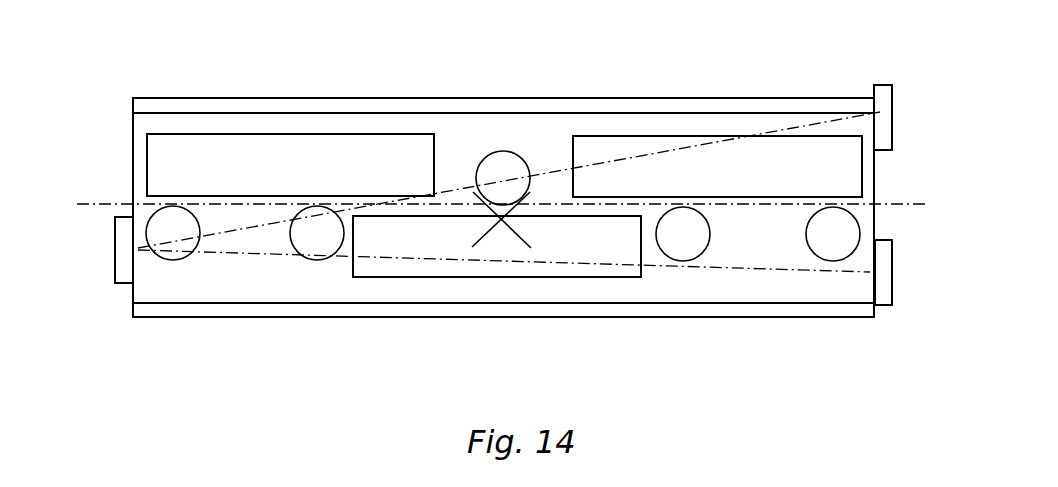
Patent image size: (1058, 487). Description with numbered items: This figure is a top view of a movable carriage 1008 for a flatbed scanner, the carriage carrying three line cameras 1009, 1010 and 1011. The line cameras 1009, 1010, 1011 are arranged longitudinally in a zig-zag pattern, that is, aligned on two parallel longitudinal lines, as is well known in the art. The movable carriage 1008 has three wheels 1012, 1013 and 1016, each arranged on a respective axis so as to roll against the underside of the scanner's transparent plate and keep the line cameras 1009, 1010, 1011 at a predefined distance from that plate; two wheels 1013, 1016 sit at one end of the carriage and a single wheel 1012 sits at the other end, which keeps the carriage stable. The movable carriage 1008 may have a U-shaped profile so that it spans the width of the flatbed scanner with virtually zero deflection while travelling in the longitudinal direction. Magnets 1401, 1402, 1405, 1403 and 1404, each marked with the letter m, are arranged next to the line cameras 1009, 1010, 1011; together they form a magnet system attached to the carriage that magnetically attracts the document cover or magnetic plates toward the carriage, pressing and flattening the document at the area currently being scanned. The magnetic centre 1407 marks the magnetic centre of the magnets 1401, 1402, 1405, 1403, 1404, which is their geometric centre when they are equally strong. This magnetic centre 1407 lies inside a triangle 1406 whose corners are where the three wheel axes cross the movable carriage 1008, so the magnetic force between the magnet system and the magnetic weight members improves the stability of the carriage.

The movable carriage 1008 is at (132, 137).
The line camera 1009 is at (290, 165).
The line camera 1010 is at (497, 246).
The line camera 1011 is at (717, 166).
The wheel 1012 is at (114, 256).
The wheel 1013 is at (892, 278).
The wheel 1016 is at (893, 110).
The magnet 1401 is at (168, 259).
The magnet 1402 is at (294, 258).
The magnet 1403 is at (692, 255).
The magnet 1404 is at (843, 257).
The magnet 1405 is at (523, 146).
The triangle 1406 is at (797, 126).
The magnetic centre 1407 is at (503, 220).